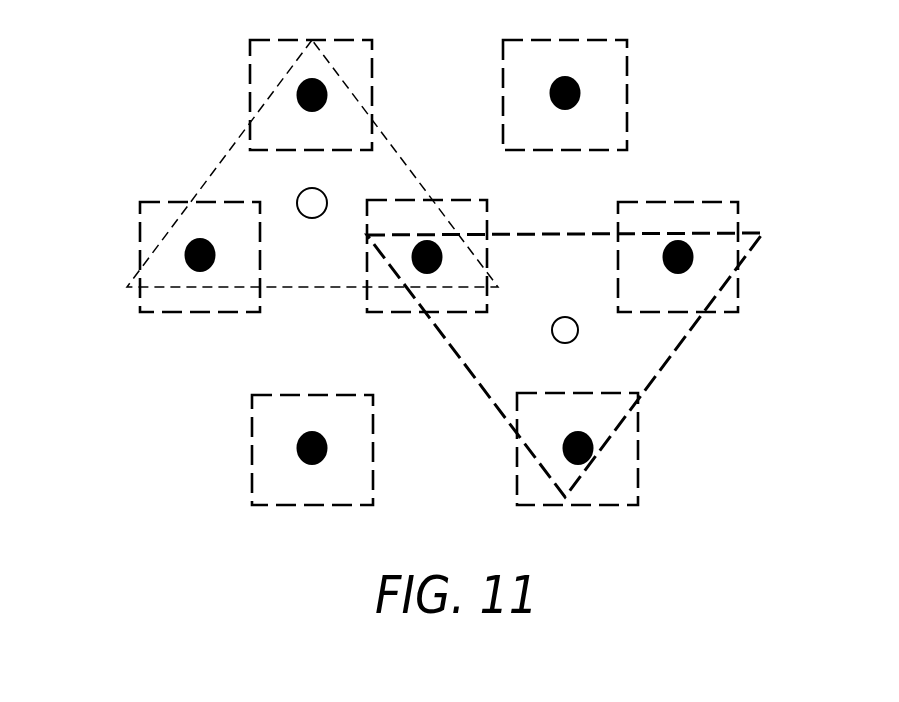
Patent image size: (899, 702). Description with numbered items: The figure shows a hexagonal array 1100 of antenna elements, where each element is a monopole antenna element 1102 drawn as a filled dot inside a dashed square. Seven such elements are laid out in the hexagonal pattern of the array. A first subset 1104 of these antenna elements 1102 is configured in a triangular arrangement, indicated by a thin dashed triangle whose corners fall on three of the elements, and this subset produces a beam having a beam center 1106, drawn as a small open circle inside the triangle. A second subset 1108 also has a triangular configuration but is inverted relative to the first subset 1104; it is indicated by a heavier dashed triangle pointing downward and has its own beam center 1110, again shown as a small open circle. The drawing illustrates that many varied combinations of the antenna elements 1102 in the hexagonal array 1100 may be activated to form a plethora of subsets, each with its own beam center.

The hexagonal array 1100 is at (802, 143).
The monopole antenna element 1102 is at (565, 76).
The first subset 1104 is at (218, 163).
The beam center 1106 is at (312, 218).
The second subset 1108 is at (757, 246).
The beam center 1110 is at (578, 330).